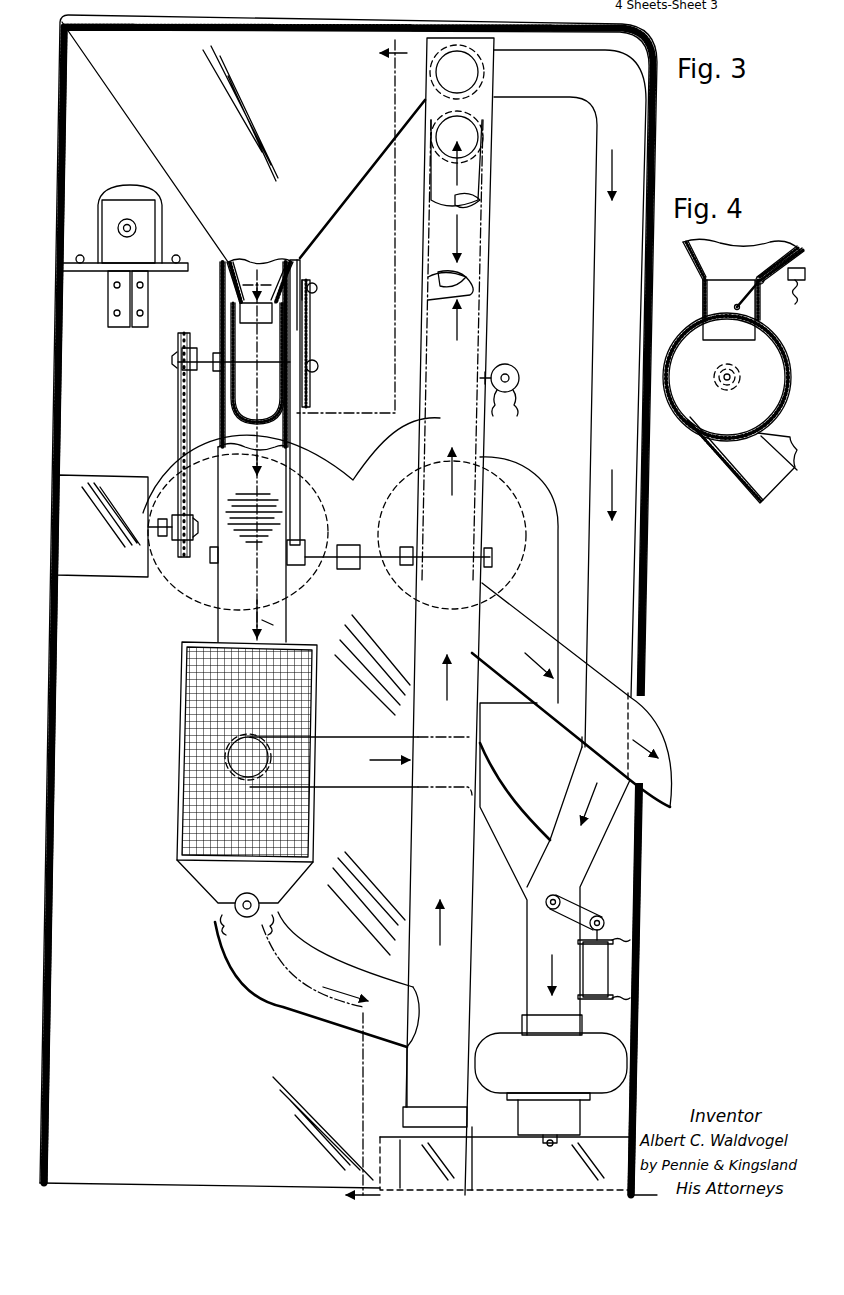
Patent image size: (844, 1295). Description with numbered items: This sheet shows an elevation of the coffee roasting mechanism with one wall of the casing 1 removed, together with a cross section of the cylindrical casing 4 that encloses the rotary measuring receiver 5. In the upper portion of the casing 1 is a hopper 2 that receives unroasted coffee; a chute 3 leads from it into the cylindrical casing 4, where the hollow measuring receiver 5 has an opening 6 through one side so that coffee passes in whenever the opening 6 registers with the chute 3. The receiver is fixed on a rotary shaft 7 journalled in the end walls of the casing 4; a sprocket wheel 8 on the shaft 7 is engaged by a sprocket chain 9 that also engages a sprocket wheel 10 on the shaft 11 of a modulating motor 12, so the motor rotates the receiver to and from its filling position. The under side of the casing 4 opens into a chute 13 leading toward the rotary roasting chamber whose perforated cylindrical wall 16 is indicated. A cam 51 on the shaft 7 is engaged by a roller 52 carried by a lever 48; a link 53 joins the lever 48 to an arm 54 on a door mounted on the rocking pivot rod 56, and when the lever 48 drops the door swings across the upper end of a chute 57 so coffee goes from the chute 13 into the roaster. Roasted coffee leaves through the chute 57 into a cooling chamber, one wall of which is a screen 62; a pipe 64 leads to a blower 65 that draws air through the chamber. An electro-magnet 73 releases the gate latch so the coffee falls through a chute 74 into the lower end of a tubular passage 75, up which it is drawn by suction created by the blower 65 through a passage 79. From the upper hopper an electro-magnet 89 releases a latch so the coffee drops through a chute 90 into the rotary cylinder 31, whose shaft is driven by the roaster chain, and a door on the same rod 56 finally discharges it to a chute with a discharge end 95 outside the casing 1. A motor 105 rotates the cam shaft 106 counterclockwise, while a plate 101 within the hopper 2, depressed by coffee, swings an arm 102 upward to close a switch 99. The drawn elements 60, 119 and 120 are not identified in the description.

In FIG. 3, the casing 1 is at (40, 430).
In FIG. 3, the hopper 2 is at (336, 186).
In FIG. 4, the hopper 2 is at (690, 260).
In FIG. 4, the chute 3 is at (703, 295).
In FIG. 4, the cylindrical casing 4 is at (780, 348).
In FIG. 3, the measuring receiver 5 is at (300, 342).
In FIG. 4, the measuring receiver 5 is at (712, 420).
In FIG. 3, the opening 6 is at (240, 313).
In FIG. 4, the opening 6 is at (715, 338).
In FIG. 3, the rotary shaft 7 is at (212, 364).
In FIG. 4, the rotary shaft 7 is at (722, 384).
In FIG. 3, the sprocket wheel 8 is at (182, 346).
In FIG. 3, the sprocket chain 9 is at (178, 393).
In FIG. 3, the sprocket wheel 10 is at (185, 512).
In FIG. 3, the shaft 11 is at (163, 537).
In FIG. 3, the modulating motor 12 is at (112, 567).
In FIG. 4, the chute 13 is at (750, 490).
In FIG. 3, the perforated cylindrical wall 16 is at (190, 582).
In FIG. 3, the rotary cylinder 31 is at (510, 575).
In FIG. 3, the lever 48 is at (300, 262).
In FIG. 3, the cam 51 is at (305, 360).
In FIG. 3, the roller 52 is at (310, 285).
In FIG. 3, the link 53 is at (286, 456).
In FIG. 3, the arm 54 is at (305, 548).
In FIG. 3, the rocking pivot rod 56 is at (336, 560).
In FIG. 3, the chute 57 is at (273, 625).
In FIG. 3, the discharge duct 60 is at (490, 1160).
In FIG. 3, the screen 62 is at (290, 823).
In FIG. 3, the pipe 64 is at (500, 790).
In FIG. 3, the blower 65 is at (616, 1055).
In FIG. 3, the electro-magnet 73 is at (240, 898).
In FIG. 3, the chute 74 is at (272, 985).
In FIG. 3, the tubular passage 75 is at (478, 183).
In FIG. 3, the passage 79 is at (595, 412).
In FIG. 3, the electro-magnet 89 is at (512, 376).
In FIG. 3, the chute 90 is at (483, 462).
In FIG. 3, the discharge end 95 is at (660, 742).
In FIG. 4, the switch 99 is at (790, 258).
In FIG. 3, the plate 101 is at (265, 282).
In FIG. 4, the plate 101 is at (745, 297).
In FIG. 4, the arm 102 is at (786, 278).
In FIG. 3, the motor 105 is at (127, 195).
In FIG. 3, the cam shaft 106 is at (127, 232).
In FIG. 3, the nozzle 119 is at (560, 1135).
In FIG. 3, the solenoid 120 is at (600, 982).